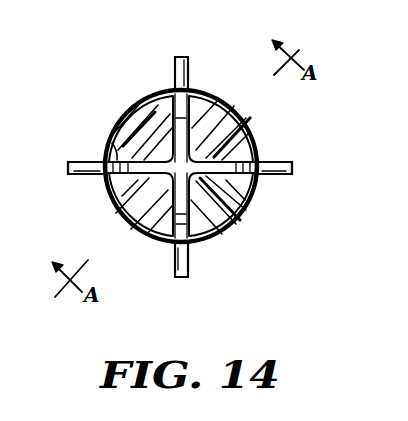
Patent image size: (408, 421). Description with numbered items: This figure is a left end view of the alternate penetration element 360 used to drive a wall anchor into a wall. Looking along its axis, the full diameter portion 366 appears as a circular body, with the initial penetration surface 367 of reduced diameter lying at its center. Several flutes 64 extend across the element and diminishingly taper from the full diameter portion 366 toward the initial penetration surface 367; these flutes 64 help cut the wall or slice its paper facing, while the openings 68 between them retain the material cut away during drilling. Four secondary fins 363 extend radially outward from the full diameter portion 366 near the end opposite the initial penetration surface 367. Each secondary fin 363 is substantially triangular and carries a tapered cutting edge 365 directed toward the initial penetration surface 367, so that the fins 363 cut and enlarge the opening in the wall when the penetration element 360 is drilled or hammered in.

The penetration element 360 is at (171, 171).
The tapered cutting edge 365 is at (176, 66).
The secondary fin 363 is at (191, 69).
The full diameter portion 366 is at (130, 107).
The initial penetration surface 367 is at (112, 143).
The opening 68 is at (118, 148).
The flute 64 is at (186, 118).